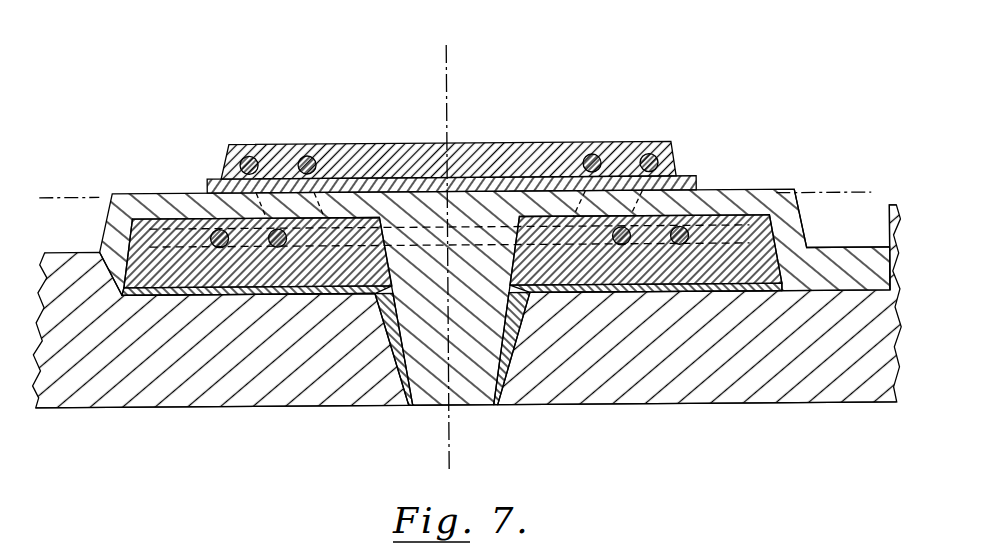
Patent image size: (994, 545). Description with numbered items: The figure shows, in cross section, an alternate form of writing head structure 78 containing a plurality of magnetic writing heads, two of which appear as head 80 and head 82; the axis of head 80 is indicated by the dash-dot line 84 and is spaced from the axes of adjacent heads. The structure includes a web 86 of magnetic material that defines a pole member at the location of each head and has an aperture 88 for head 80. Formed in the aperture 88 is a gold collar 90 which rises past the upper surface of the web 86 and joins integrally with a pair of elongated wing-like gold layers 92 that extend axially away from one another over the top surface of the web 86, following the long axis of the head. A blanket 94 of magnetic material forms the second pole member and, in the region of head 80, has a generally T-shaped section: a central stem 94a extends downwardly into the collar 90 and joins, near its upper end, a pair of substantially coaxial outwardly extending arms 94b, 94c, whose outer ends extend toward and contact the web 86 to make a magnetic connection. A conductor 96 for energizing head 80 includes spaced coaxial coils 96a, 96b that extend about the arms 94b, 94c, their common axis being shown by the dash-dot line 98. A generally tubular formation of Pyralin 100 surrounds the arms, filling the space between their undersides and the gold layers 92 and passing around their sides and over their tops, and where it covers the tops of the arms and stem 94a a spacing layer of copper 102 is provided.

The writing head structure 78 is at (771, 420).
The magnetic writing head 80 is at (584, 87).
The magnetic writing head 82 is at (887, 231).
The dash-dot line 84 is at (448, 68).
The web 86 is at (150, 390).
The aperture 88 is at (407, 403).
The gold collar 90 is at (497, 405).
The wing-like gold layers 92 is at (255, 294).
The blanket 94 is at (718, 189).
The central stem 94a is at (432, 383).
The arm 94b is at (176, 214).
The arm 94c is at (766, 197).
The conductor 96 is at (305, 141).
The coil 96a is at (268, 142).
The coil 96b is at (648, 141).
The dash-dot line 98 is at (70, 195).
The tubular formation of Pyralin 100 is at (361, 139).
The spacing layer of copper 102 is at (484, 188).